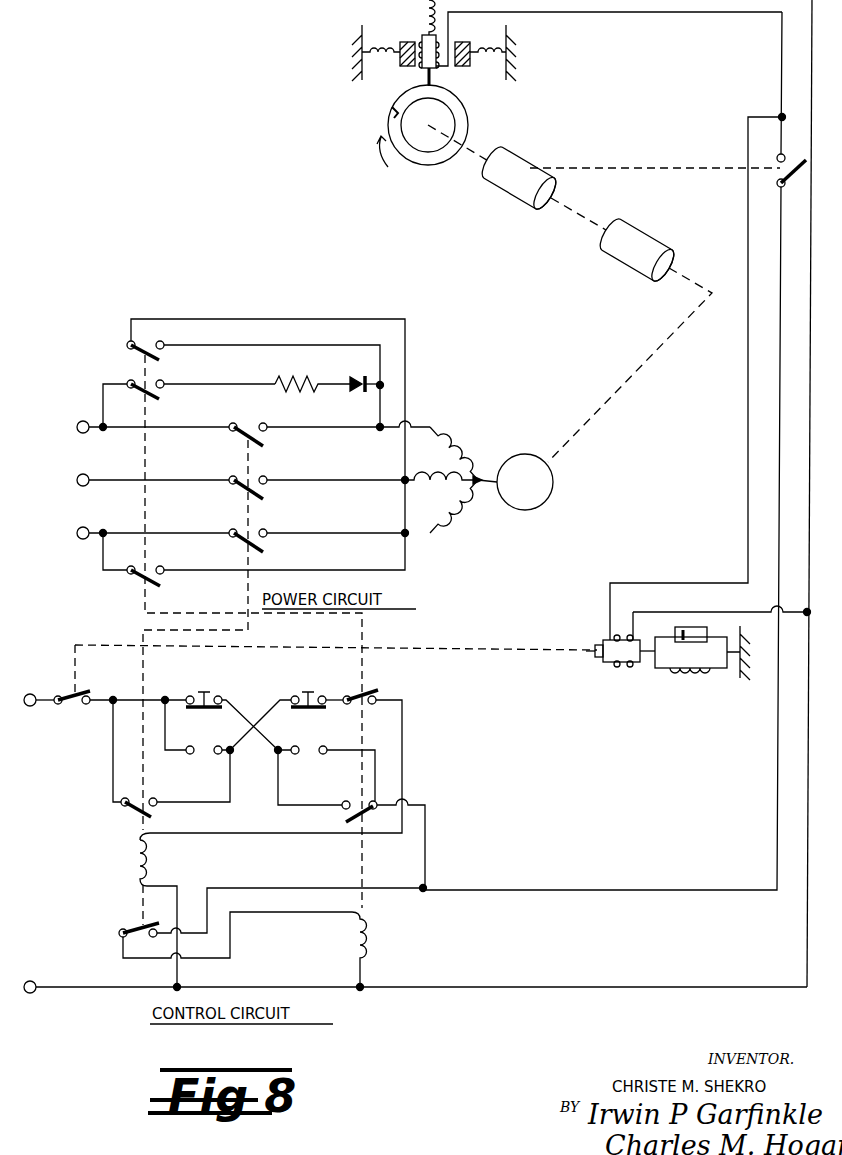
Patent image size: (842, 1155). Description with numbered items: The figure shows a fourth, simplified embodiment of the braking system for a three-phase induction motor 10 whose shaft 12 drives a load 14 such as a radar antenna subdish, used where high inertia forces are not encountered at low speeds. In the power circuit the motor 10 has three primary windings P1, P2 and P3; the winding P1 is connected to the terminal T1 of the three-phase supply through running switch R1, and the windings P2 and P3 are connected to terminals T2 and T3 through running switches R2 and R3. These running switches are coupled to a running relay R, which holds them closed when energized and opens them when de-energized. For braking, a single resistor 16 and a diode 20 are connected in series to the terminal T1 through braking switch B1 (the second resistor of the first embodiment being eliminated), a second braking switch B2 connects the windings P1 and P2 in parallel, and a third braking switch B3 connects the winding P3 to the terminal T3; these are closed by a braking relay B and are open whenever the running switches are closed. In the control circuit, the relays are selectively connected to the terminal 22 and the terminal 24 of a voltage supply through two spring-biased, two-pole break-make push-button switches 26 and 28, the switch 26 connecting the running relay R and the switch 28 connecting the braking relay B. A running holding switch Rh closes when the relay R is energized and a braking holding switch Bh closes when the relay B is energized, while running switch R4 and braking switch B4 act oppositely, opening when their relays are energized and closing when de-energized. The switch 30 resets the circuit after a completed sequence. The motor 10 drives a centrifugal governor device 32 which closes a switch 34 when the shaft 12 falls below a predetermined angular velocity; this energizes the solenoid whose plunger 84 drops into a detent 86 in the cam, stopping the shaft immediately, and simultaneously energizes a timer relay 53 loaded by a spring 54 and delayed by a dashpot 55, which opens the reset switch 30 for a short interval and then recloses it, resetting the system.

The 3-phase induction motor 10 is at (553, 481).
The shaft 12 is at (618, 395).
The load 14 is at (647, 242).
The resistor 16 is at (292, 384).
The diode 20 is at (369, 396).
The terminal 22 is at (29, 694).
The terminal 24 is at (35, 982).
The push-button switch 26 is at (194, 709).
The push-button switch 28 is at (308, 710).
The switch 30 is at (71, 702).
The centrifugal governor device 32 is at (521, 201).
The switch 34 is at (798, 172).
The timer relay 53 is at (621, 679).
The spring 54 is at (688, 673).
The dashpot 55 is at (689, 628).
The plunger 84 is at (436, 79).
The detent 86 is at (392, 109).
The terminal T1 is at (78, 421).
The terminal T2 is at (78, 474).
The terminal T3 is at (78, 527).
The running switch R1 is at (261, 445).
The running switch R2 is at (261, 498).
The running switch R3 is at (261, 547).
The running switch R4 is at (140, 926).
The running holding switch Rh is at (138, 812).
The running relay R is at (137, 858).
The braking switch B1 is at (144, 393).
The braking switch B2 is at (144, 354).
The braking switch B3 is at (144, 577).
The braking switch B4 is at (369, 695).
The braking holding switch Bh is at (347, 817).
The braking relay B is at (365, 941).
The primary winding P1 is at (451, 449).
The primary winding P2 is at (441, 475).
The primary winding P3 is at (451, 528).